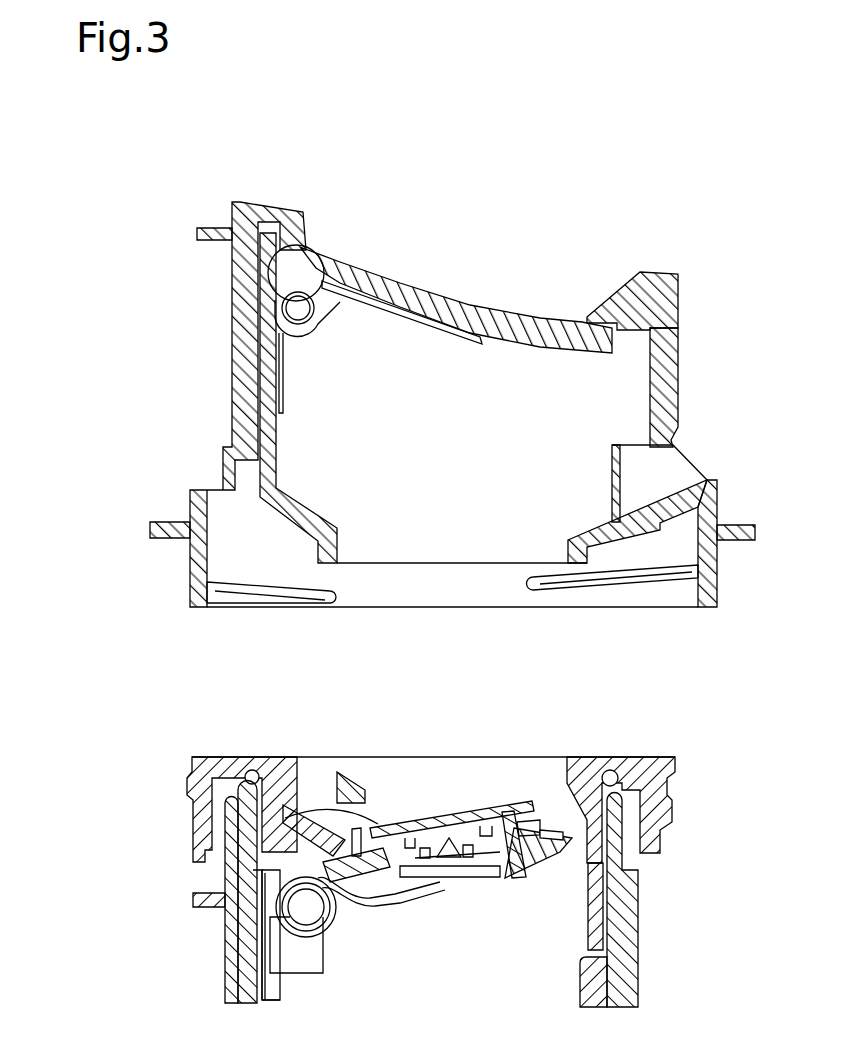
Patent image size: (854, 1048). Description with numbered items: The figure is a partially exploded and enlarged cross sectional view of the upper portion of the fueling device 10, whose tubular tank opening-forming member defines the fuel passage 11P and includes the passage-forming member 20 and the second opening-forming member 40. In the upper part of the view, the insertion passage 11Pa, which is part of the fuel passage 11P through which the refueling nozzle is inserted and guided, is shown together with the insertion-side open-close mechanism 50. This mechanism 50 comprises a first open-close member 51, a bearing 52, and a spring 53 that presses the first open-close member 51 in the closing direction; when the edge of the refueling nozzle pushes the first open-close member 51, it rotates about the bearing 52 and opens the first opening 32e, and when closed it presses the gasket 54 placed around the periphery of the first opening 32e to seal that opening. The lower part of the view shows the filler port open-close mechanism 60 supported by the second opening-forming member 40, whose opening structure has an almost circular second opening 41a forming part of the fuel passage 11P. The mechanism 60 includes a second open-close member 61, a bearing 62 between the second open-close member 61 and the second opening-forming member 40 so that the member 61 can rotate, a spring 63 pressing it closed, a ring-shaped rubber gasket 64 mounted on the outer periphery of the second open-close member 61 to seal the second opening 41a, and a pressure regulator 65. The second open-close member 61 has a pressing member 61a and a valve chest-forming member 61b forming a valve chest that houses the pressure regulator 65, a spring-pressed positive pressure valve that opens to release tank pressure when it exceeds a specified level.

The fueling device 10 is at (168, 205).
The insertion-side open-close mechanism 50 is at (68, 232).
The first open-close member 51 is at (333, 283).
The bearing 52 is at (283, 302).
The spring 53 is at (280, 345).
The first opening 32e is at (548, 323).
The gasket 54 is at (588, 318).
The insertion passage 11Pa is at (517, 488).
The fuel passage 11P is at (447, 1012).
The second opening 41a is at (547, 813).
The filler port open-close mechanism 60 is at (112, 798).
The second open-close member 61 is at (345, 815).
The bearing 62 is at (330, 870).
The spring 63 is at (262, 900).
The gasket 64 is at (562, 838).
The second opening-forming member 40 is at (603, 895).
The passage-forming member 20 is at (637, 967).
The pressing member 61a is at (398, 877).
The valve chest-forming member 61b is at (355, 883).
The pressure regulator 65 is at (450, 872).